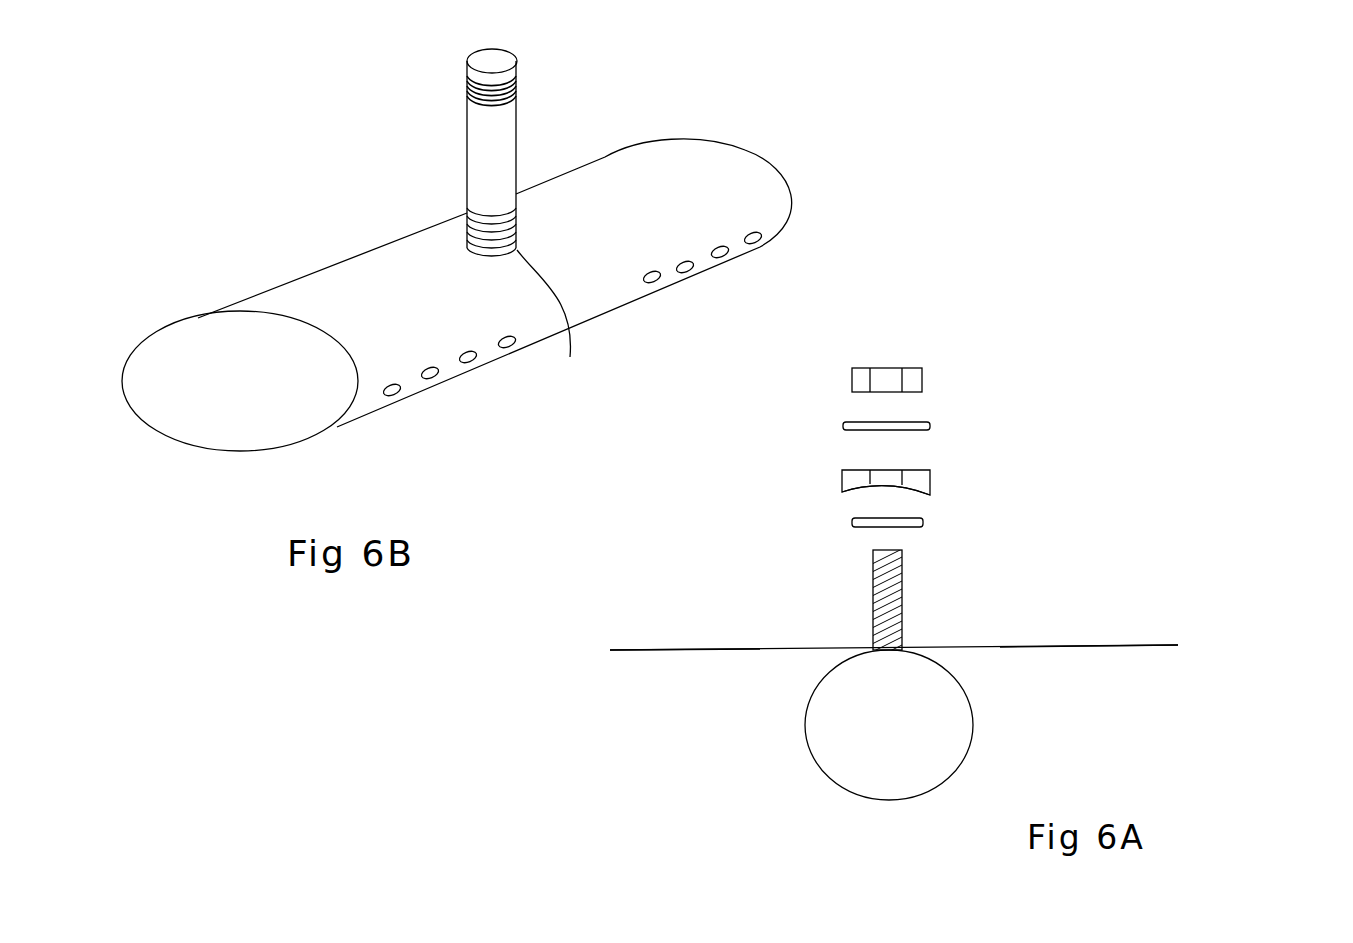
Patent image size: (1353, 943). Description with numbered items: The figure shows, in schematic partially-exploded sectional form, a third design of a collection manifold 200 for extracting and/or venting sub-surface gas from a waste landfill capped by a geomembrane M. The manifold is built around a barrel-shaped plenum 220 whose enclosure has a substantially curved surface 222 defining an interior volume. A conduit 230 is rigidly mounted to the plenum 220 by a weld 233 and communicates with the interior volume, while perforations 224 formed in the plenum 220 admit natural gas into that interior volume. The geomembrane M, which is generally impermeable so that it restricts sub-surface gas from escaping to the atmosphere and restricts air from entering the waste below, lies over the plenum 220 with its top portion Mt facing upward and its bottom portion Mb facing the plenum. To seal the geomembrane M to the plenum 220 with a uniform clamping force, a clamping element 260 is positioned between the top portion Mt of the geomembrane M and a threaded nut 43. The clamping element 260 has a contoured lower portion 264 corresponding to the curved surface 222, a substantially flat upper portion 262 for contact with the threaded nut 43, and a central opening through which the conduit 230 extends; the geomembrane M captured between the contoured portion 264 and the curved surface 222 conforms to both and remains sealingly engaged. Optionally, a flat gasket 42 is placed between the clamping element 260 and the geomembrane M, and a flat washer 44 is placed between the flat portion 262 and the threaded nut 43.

In FIG. 6A, the collection manifold 200 is at (928, 561).
In FIG. 6B, the barrel-shaped plenum 220 is at (457, 260).
In FIG. 6A, the barrel-shaped plenum 220 is at (940, 735).
In FIG. 6B, the curved surface 222 is at (305, 295).
In FIG. 6A, the curved surface 222 is at (812, 757).
In FIG. 6B, the perforations 224 is at (397, 396).
In FIG. 6B, the conduit 230 is at (455, 130).
In FIG. 6A, the conduit 230 is at (915, 597).
In FIG. 6B, the weld 233 is at (556, 324).
In FIG. 6A, the clamping element 260 is at (887, 488).
In FIG. 6A, the flat upper portion 262 is at (920, 467).
In FIG. 6A, the contoured lower portion 264 is at (858, 490).
In FIG. 6A, the flat gasket 42 is at (923, 522).
In FIG. 6A, the threaded nut 43 is at (916, 380).
In FIG. 6A, the flat washer 44 is at (930, 427).
In FIG. 6A, the geomembrane M is at (1163, 645).
In FIG. 6A, the top portion of the geomembrane Mt is at (638, 648).
In FIG. 6A, the bottom portion of the geomembrane Mb is at (1148, 650).